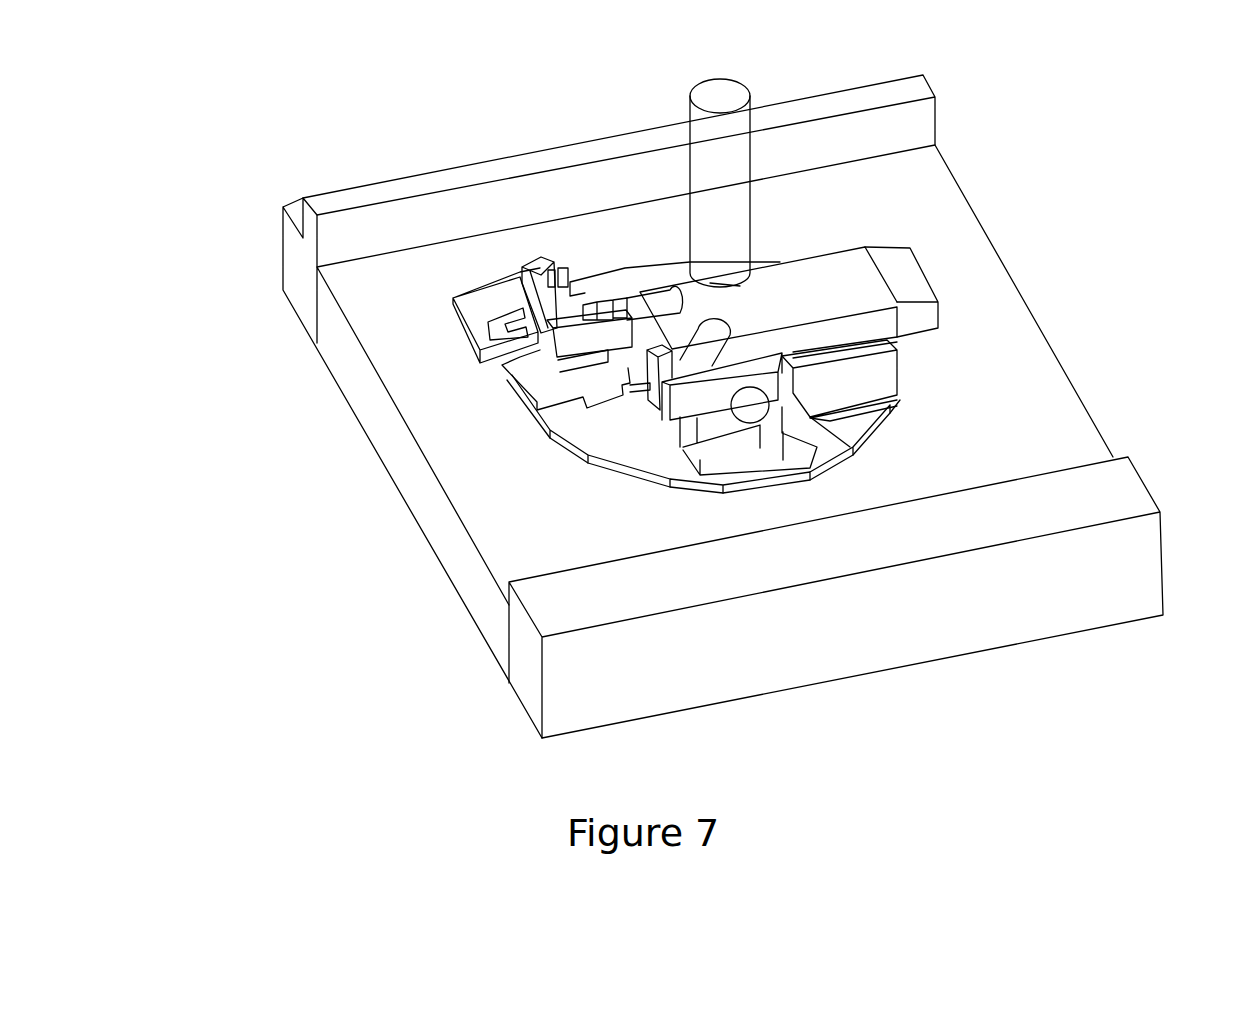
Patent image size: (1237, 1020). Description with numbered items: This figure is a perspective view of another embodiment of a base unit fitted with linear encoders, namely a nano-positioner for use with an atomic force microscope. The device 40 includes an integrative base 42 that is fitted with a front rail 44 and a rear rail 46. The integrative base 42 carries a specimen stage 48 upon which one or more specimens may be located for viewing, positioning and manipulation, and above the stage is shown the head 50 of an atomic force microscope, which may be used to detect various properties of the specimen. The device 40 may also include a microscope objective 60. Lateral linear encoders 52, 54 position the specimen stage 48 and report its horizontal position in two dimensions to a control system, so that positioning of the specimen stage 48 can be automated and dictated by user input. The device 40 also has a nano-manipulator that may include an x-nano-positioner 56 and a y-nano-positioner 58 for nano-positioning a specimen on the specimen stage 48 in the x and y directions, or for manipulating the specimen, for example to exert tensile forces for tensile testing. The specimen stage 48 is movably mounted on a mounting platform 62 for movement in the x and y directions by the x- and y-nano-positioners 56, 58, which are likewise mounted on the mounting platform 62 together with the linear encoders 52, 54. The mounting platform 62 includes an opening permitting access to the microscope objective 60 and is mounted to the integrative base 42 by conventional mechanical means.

The device 40 is at (313, 560).
The integrative base 42 is at (1030, 437).
The front rail 44 is at (1133, 577).
The rear rail 46 is at (918, 117).
The specimen stage 48 is at (858, 265).
The head of an atomic force microscope 50 is at (737, 120).
The lateral linear encoder 52 is at (915, 283).
The lateral linear encoder 54 is at (880, 387).
The x-nano-positioner 56 is at (568, 312).
The y-nano-positioner 58 is at (740, 372).
The microscope objective 60 is at (668, 335).
The mounting platform 62 is at (640, 452).